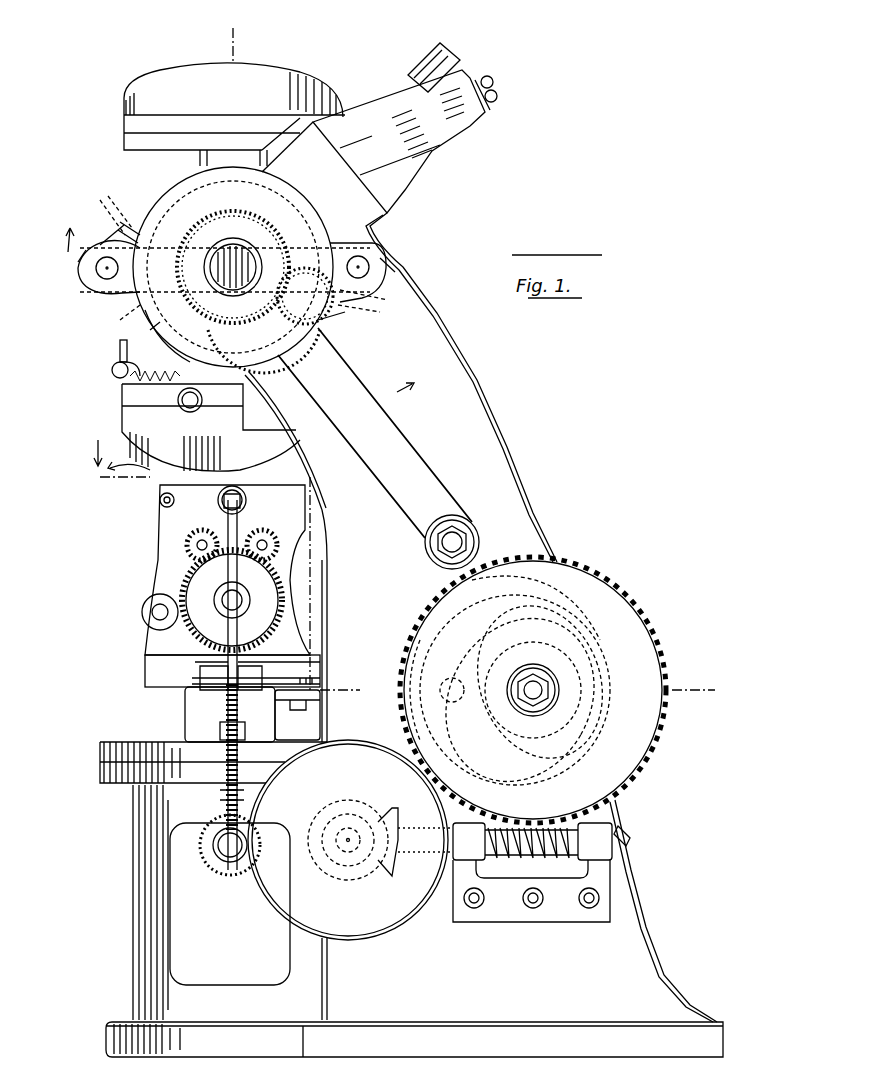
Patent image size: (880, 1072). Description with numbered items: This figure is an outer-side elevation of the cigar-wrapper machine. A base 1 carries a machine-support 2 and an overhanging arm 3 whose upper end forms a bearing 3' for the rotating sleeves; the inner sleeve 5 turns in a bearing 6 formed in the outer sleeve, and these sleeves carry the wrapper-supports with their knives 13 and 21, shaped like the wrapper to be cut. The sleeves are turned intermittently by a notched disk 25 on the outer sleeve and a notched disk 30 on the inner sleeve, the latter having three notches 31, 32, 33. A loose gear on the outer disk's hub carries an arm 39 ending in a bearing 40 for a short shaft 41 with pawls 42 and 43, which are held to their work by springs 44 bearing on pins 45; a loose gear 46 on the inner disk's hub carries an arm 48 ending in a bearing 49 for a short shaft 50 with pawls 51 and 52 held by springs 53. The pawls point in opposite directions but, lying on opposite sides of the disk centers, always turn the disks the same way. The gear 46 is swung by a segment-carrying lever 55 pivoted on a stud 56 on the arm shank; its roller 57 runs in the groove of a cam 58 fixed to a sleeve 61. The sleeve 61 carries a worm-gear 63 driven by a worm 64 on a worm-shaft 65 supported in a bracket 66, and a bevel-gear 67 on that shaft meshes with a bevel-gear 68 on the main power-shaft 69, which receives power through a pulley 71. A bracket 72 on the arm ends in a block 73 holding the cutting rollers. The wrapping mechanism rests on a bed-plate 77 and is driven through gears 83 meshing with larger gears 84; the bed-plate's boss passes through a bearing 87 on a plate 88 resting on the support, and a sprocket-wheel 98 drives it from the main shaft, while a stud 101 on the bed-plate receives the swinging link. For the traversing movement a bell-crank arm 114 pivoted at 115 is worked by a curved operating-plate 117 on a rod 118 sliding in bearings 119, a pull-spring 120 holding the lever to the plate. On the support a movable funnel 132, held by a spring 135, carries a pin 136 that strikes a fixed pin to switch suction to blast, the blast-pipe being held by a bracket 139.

The base 1 is at (414, 1008).
The machine-support 2 is at (130, 826).
The overhanging arm 3 is at (481, 617).
The bearing 3' is at (120, 313).
The inner sleeve 5 is at (234, 31).
The bearing 6 is at (409, 570).
The knife 13 is at (234, 114).
The knife 21 is at (211, 427).
The notched disk 25 is at (196, 174).
The notched disk 30 is at (163, 336).
The notch 31 is at (234, 167).
The notch 32 is at (158, 222).
The notch 33 is at (205, 312).
The arm 39 is at (217, 248).
The bearing 40 is at (95, 278).
The short shaft 41 is at (106, 278).
The pawl 42 is at (90, 268).
The pawl 43 is at (135, 222).
The springs 44 is at (100, 240).
The pins 45 is at (106, 204).
The loose gear 46 is at (233, 251).
The arm 48 is at (304, 264).
The bearing 49 is at (390, 272).
The short shaft 50 is at (362, 262).
The pawl 51 is at (377, 289).
The pawl 52 is at (342, 318).
The springs 53 is at (373, 307).
The segment-carrying lever 55 is at (375, 433).
The stud 56 is at (456, 536).
The roller 57 is at (440, 690).
The cam 58 is at (405, 712).
The sleeve 61 is at (522, 694).
The worm-gear 63 is at (652, 740).
The worm 64 is at (527, 827).
The worm-shaft 65 is at (632, 836).
The bracket 66 is at (560, 918).
The bevel-gear 67 is at (388, 872).
The bevel-gear 68 is at (330, 866).
The shaft 69 is at (345, 842).
The pulley 71 is at (355, 935).
The bracket 72 is at (418, 162).
The block 73 is at (456, 74).
The bed-plate 77 is at (145, 672).
The gears 83 is at (255, 535).
The larger gears 84 is at (232, 600).
The bearing 87 is at (184, 712).
The plate 88 is at (100, 752).
The sprocket-wheel 98 is at (240, 866).
The stud 101 is at (297, 715).
The arm of bell-crank lever 114 is at (228, 630).
The pivot 115 is at (260, 660).
The curved operating-plate 117 is at (258, 684).
The rod 118 is at (222, 855).
The bearings 119 is at (220, 728).
The pull-spring 120 is at (222, 800).
The movable funnel 132 is at (112, 370).
The spring 135 is at (153, 386).
The pin 136 is at (118, 346).
The bracket 139 is at (208, 400).